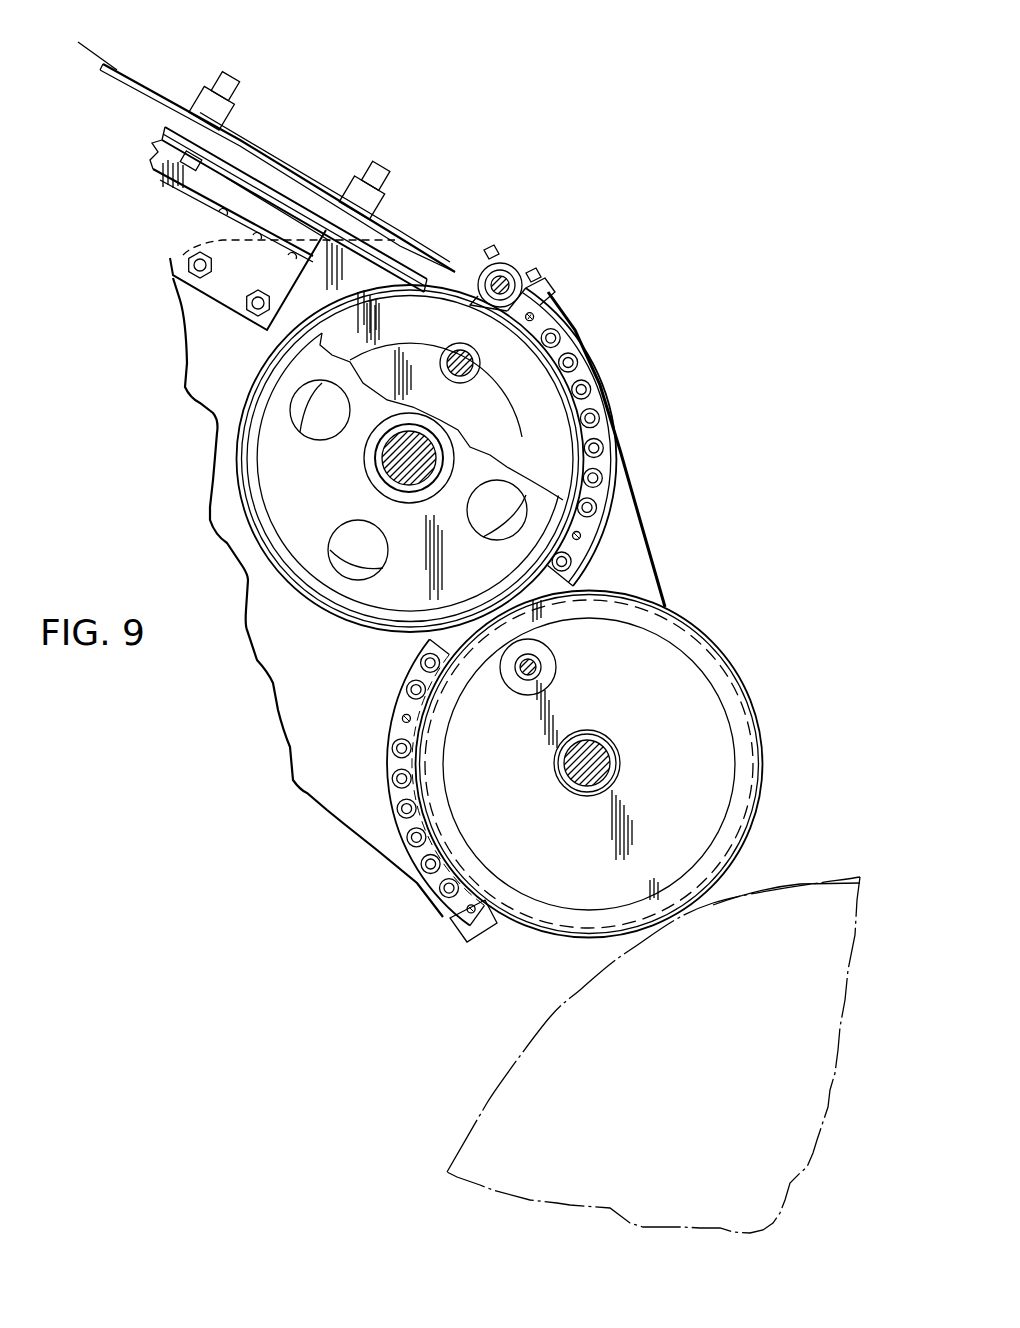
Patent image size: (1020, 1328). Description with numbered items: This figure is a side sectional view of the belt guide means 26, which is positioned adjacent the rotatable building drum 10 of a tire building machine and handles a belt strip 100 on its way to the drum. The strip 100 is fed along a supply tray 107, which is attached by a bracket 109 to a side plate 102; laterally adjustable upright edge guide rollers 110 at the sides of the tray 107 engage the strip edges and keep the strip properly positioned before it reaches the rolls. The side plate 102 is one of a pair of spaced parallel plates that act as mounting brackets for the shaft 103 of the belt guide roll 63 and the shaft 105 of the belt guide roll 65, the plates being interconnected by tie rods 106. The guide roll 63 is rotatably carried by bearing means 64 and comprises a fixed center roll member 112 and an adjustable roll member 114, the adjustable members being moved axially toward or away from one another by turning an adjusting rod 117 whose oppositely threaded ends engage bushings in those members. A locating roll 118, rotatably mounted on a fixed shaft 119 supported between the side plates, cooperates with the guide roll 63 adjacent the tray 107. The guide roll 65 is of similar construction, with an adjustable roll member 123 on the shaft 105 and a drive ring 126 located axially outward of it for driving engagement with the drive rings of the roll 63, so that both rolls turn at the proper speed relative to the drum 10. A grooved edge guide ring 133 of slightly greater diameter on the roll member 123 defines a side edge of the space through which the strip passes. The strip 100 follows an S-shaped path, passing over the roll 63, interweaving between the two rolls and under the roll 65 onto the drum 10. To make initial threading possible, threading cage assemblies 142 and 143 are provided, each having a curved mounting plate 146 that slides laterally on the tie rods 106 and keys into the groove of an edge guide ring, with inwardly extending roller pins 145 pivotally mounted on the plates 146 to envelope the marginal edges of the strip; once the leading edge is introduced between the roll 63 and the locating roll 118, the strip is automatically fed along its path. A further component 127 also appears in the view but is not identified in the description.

The building drum 10 is at (492, 1060).
The belt guide means 26 is at (550, 163).
The belt guide roll 63 is at (326, 625).
The bearing means 64 is at (364, 458).
The belt guide roll 65 is at (720, 646).
The belt strip 100 is at (103, 58).
The side plate 102 is at (627, 455).
The shaft 103 is at (385, 471).
The shaft 105 is at (608, 772).
The tie rods 106 is at (534, 319).
The supply tray 107 is at (425, 237).
The bracket 109 is at (210, 190).
The edge guide rollers 110 is at (265, 128).
The fixed center roll member 112 is at (270, 452).
The adjustable roll member 114 is at (537, 382).
The adjusting rod 117 is at (460, 350).
The locating roll 118 is at (513, 275).
The fixed shaft 119 is at (532, 278).
The adjustable roll member 123 is at (725, 757).
The drive ring 126 is at (757, 818).
The pin 127 is at (548, 667).
The grooved edge guide ring 133 is at (422, 758).
The threading cage assembly 142 is at (613, 400).
The threading cage assembly 143 is at (381, 797).
The roller pins 145 is at (590, 509).
The curved mounting plate 146 is at (555, 303).